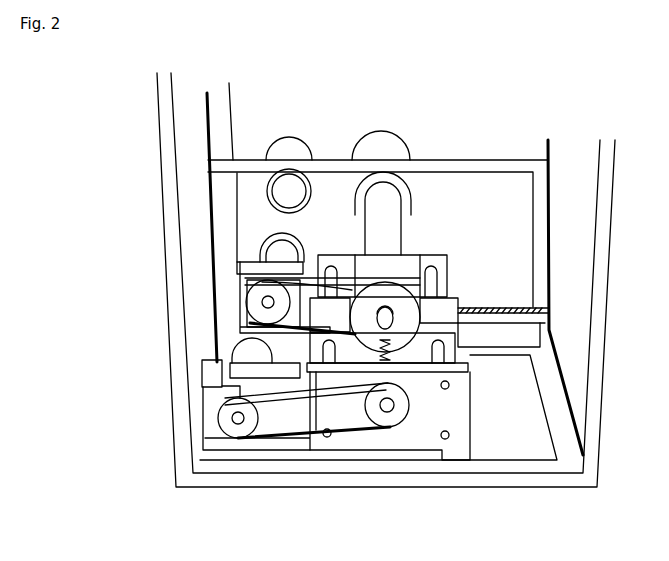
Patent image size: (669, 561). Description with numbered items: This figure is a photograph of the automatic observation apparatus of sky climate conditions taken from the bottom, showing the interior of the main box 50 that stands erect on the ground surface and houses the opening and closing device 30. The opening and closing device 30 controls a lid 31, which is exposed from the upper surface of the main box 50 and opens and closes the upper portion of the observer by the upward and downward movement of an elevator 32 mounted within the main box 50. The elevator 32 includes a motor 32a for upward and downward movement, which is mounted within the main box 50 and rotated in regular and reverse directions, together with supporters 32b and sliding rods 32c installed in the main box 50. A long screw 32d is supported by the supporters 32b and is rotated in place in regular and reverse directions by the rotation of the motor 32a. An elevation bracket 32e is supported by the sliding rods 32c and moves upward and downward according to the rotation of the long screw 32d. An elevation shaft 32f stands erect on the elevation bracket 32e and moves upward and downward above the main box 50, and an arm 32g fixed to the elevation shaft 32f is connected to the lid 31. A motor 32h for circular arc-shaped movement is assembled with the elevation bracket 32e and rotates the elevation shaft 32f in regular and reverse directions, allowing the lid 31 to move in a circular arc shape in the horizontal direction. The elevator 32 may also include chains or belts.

The main box 50 is at (163, 207).
The opening and closing device 30 is at (400, 107).
The lid 31 is at (283, 140).
The elevator 32 is at (230, 312).
The motor for upward and downward movement 32a is at (240, 382).
The supporters 32b is at (389, 438).
The sliding rods 32c is at (440, 278).
The long screw 32d is at (395, 360).
The elevation bracket 32e is at (448, 310).
The elevation shaft 32f is at (398, 226).
The arm 32g is at (330, 178).
The motor for circular arc-shaped movement 32h is at (272, 257).